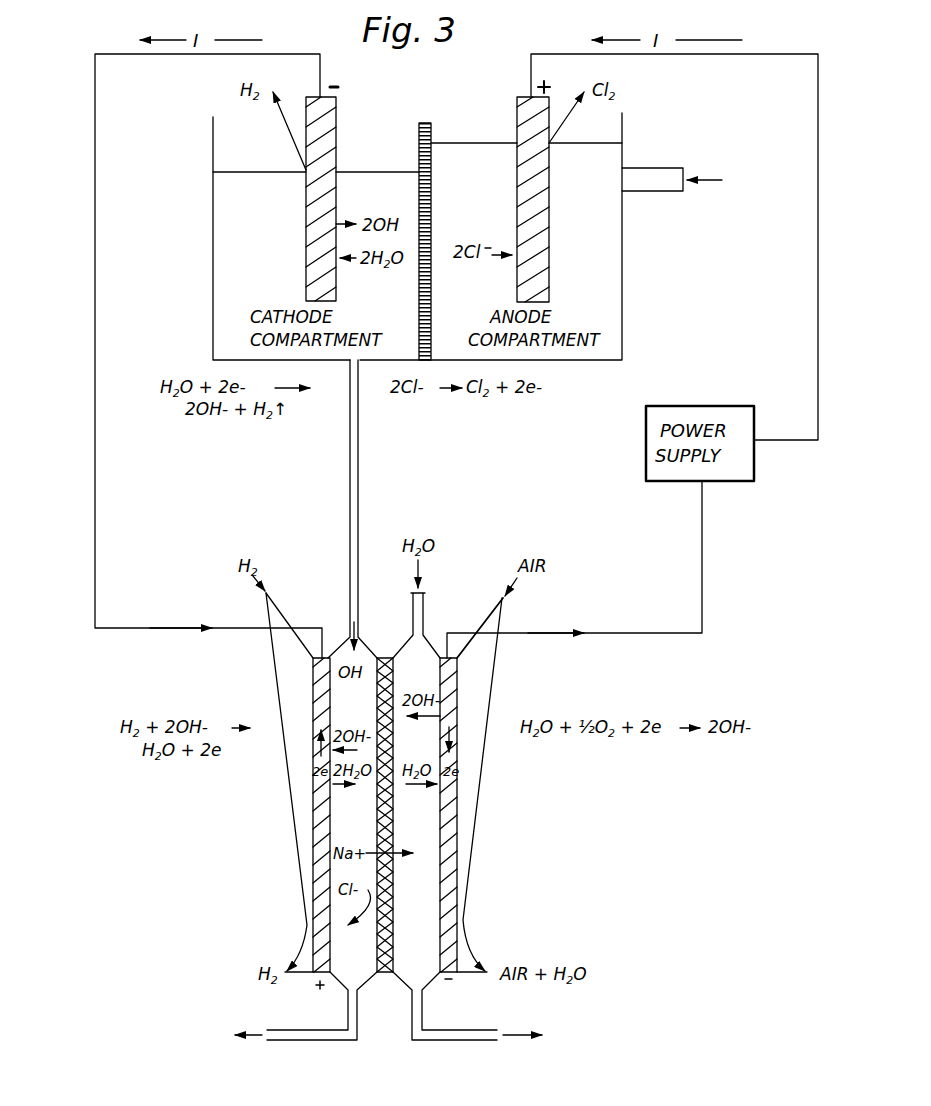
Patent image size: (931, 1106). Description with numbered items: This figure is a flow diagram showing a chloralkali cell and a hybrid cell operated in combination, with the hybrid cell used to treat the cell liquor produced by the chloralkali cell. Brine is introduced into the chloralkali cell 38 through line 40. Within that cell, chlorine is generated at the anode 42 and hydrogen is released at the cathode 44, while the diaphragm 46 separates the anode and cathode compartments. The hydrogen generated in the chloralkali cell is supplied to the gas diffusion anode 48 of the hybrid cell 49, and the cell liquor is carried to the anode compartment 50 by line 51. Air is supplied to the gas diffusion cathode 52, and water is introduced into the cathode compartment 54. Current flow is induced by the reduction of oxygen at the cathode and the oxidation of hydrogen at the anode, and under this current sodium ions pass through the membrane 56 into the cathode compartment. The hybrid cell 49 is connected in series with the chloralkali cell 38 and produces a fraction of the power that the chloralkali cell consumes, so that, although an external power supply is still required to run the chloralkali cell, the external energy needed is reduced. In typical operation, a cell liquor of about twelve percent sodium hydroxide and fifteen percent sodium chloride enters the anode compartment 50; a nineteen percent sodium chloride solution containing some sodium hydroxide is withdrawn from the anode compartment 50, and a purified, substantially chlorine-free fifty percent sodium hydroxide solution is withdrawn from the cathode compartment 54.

The chloralkali cell 38 is at (627, 333).
The line 40 is at (656, 172).
The anode 42 is at (548, 187).
The cathode 44 is at (322, 292).
The diaphragm 46 is at (431, 318).
The gas diffusion anode 48 is at (306, 936).
The hybrid cell 49 is at (460, 856).
The anode compartment 50 is at (345, 964).
The line 51 is at (358, 513).
The gas diffusion cathode 52 is at (455, 921).
The cathode compartment 54 is at (433, 980).
The membrane 56 is at (381, 975).